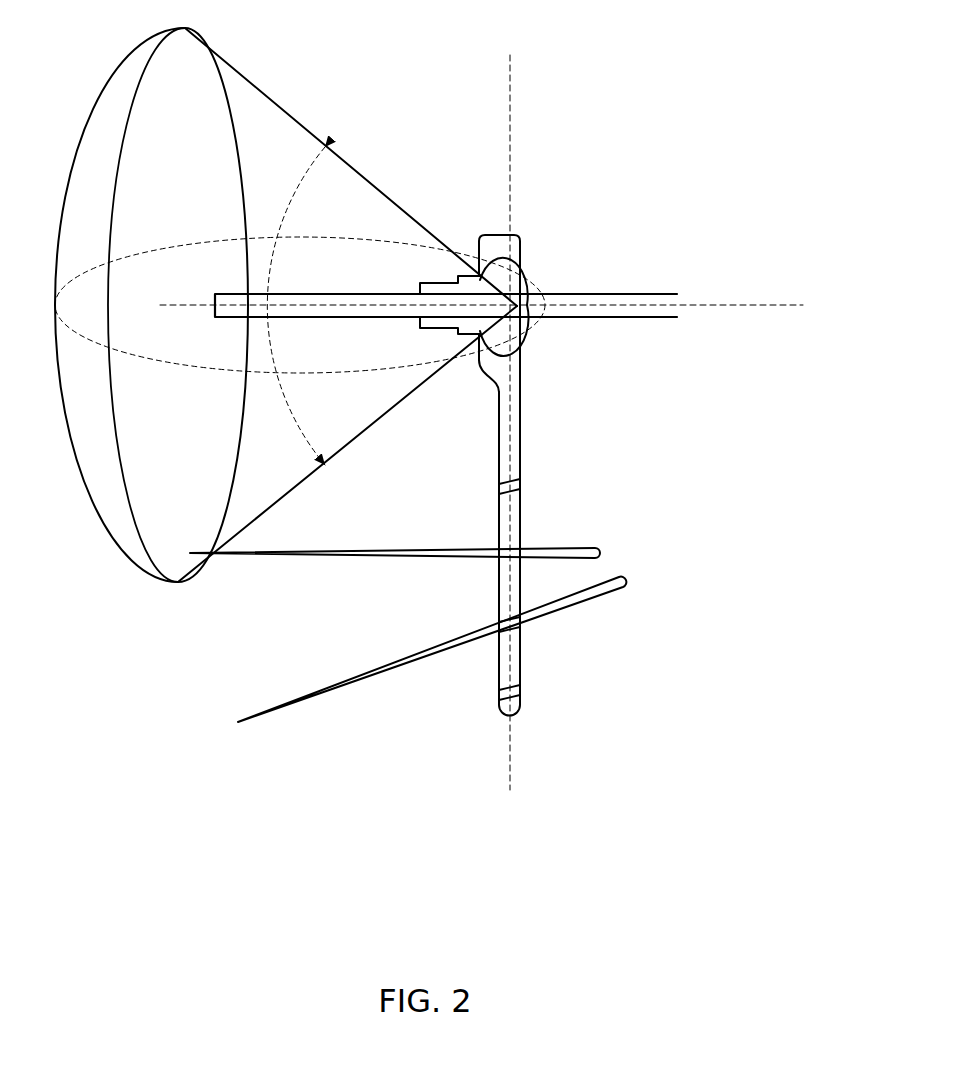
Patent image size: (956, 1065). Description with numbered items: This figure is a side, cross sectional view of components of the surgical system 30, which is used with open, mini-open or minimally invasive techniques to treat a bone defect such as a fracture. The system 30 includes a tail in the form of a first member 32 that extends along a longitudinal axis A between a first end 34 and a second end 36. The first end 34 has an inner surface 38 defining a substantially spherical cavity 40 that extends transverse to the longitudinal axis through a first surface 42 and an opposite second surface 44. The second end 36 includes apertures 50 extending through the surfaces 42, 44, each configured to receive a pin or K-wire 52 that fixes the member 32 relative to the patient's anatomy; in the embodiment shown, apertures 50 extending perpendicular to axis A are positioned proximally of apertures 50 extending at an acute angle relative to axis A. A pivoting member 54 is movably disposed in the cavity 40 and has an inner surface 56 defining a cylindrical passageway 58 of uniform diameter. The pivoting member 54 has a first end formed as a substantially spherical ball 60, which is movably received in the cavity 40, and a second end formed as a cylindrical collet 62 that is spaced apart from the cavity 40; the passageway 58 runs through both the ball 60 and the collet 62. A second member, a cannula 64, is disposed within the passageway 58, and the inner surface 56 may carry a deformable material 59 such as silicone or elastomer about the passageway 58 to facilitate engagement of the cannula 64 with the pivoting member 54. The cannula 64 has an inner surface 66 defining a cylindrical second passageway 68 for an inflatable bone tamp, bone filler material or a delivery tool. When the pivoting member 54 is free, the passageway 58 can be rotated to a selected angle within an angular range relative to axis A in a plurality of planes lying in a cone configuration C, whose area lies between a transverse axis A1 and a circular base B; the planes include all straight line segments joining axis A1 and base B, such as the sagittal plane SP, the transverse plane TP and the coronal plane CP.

The system 30 is at (722, 459).
The first member 32 is at (521, 410).
The first end 34 is at (522, 238).
The second end 36 is at (522, 658).
The inner surface 38 is at (484, 366).
The cavity 40 is at (478, 270).
The first surface 42 is at (498, 512).
The second surface 44 is at (521, 512).
The aperture 50 is at (531, 482).
The pin or K-wire 52 is at (281, 572).
The pivoting member 54 is at (524, 283).
The inner surface 56 is at (420, 288).
The passageway 58 is at (420, 323).
The deformable material 59 is at (528, 322).
The ball 60 is at (527, 336).
The collet 62 is at (465, 338).
The cannula 64 is at (666, 325).
The inner surface 66 is at (213, 296).
The second passageway 68 is at (212, 314).
The transverse plane TP is at (127, 117).
The sagittal plane SP is at (386, 248).
The coronal plane CP is at (233, 488).
The cone configuration C is at (370, 150).
The circular base B is at (105, 510).
The longitudinal axis A is at (509, 424).
The transverse axis A1 is at (482, 305).